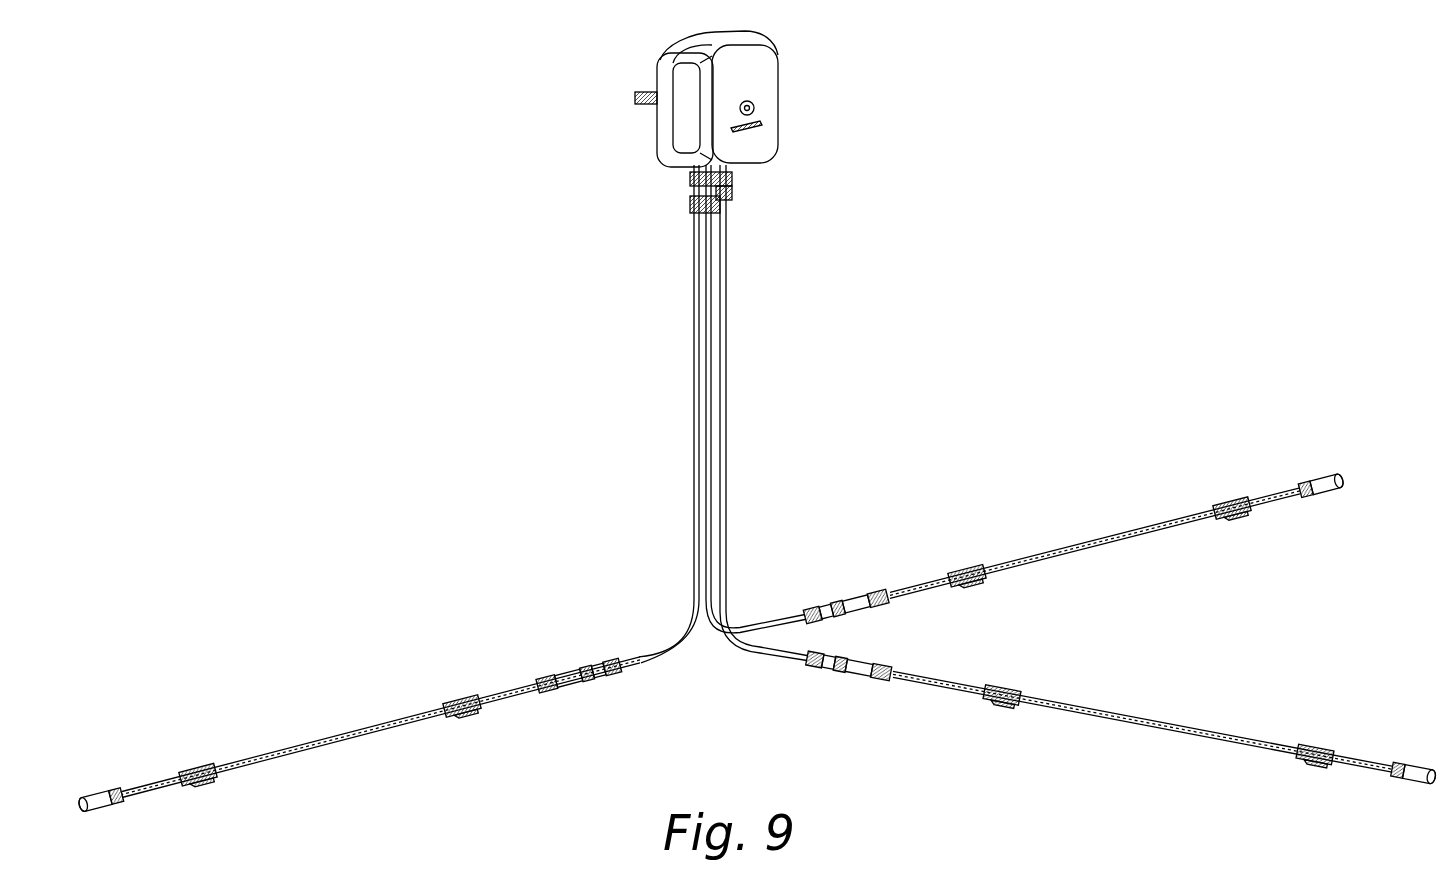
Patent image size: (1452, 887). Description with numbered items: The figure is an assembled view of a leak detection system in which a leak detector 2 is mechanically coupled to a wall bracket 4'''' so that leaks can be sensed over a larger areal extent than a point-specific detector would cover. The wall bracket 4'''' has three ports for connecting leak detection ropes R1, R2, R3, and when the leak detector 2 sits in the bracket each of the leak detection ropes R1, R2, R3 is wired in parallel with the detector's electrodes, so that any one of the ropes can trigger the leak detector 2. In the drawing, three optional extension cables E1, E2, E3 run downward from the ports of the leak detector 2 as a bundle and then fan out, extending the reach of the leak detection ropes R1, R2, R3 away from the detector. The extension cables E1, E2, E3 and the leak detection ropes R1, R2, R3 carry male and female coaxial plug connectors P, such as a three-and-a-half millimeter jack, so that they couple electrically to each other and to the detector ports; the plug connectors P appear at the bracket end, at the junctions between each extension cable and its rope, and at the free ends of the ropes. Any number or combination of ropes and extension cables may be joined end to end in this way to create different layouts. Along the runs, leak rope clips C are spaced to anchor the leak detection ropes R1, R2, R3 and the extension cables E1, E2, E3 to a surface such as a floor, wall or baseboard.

The wall bracket 4'''' is at (674, 97).
The leak detector 2 is at (748, 84).
The plug connector P is at (693, 176).
The extension cable E1 is at (694, 386).
The extension cable E2 is at (707, 432).
The extension cable E3 is at (725, 410).
The leak rope clip C is at (465, 702).
The leak detection rope R1 is at (330, 752).
The leak detection rope R2 is at (1160, 742).
The leak detection rope R3 is at (1100, 556).